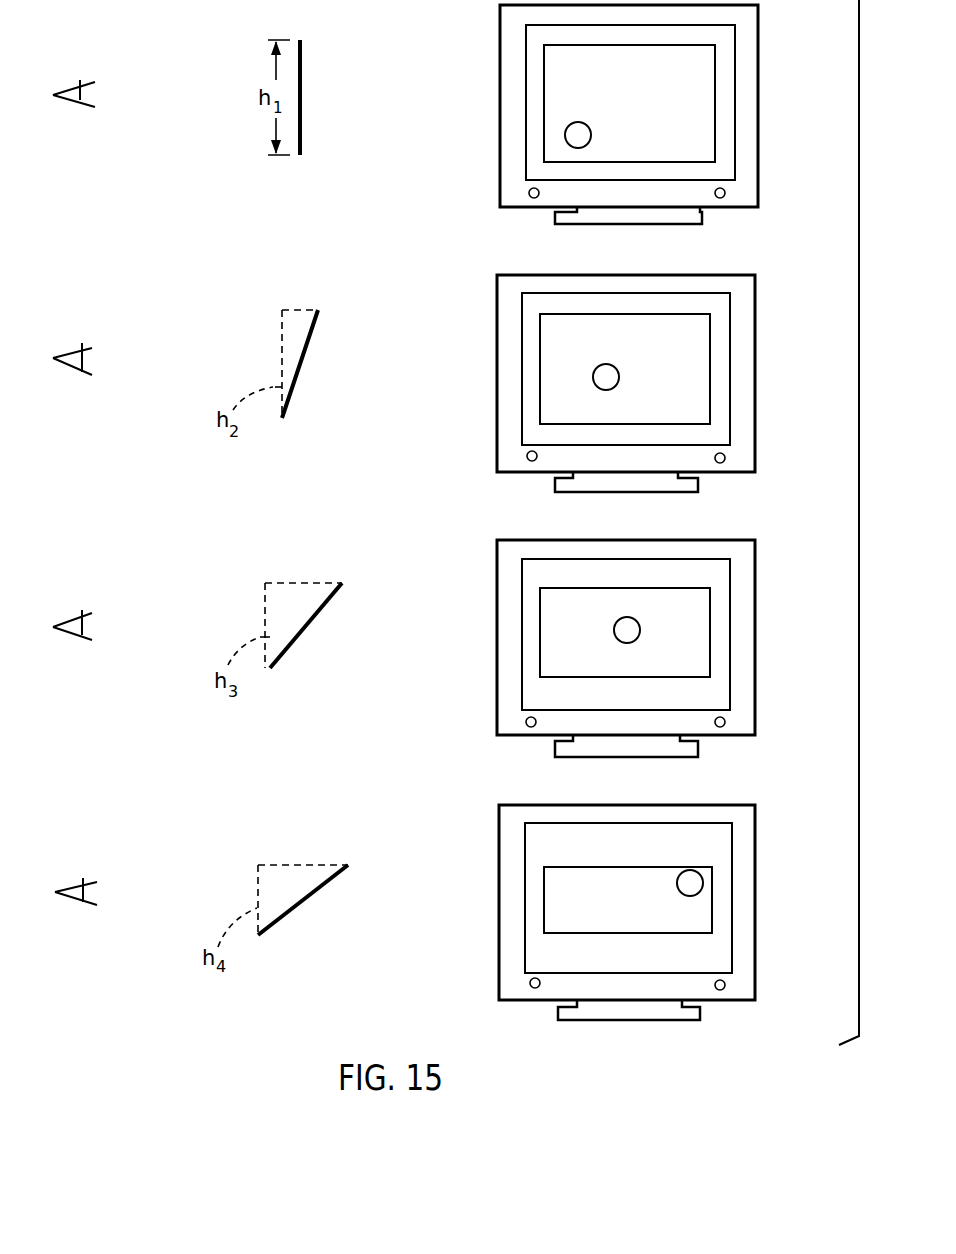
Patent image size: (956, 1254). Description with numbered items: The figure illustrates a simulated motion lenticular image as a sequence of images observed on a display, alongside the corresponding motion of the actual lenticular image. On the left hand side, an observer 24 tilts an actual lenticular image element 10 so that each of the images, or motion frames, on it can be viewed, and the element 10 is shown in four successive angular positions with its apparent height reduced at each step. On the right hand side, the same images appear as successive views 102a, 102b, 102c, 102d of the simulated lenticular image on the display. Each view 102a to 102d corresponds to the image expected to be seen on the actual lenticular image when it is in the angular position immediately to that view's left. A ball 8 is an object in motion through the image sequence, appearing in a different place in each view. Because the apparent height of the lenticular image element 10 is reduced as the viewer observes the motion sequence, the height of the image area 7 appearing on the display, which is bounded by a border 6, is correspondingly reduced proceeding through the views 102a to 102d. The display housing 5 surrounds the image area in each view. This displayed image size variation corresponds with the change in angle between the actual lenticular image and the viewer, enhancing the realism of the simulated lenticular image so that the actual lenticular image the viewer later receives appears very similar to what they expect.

The observer 24 is at (80, 80).
The lenticular image element 10 is at (310, 58).
The view of display 102a is at (740, 107).
The view of display 102b is at (735, 359).
The view of display 102c is at (736, 607).
The view of display 102d is at (739, 864).
The monitor frame/bezel 5 is at (723, 170).
The border 6 is at (590, 45).
The image area 7 is at (683, 86).
The ball 8 is at (585, 127).